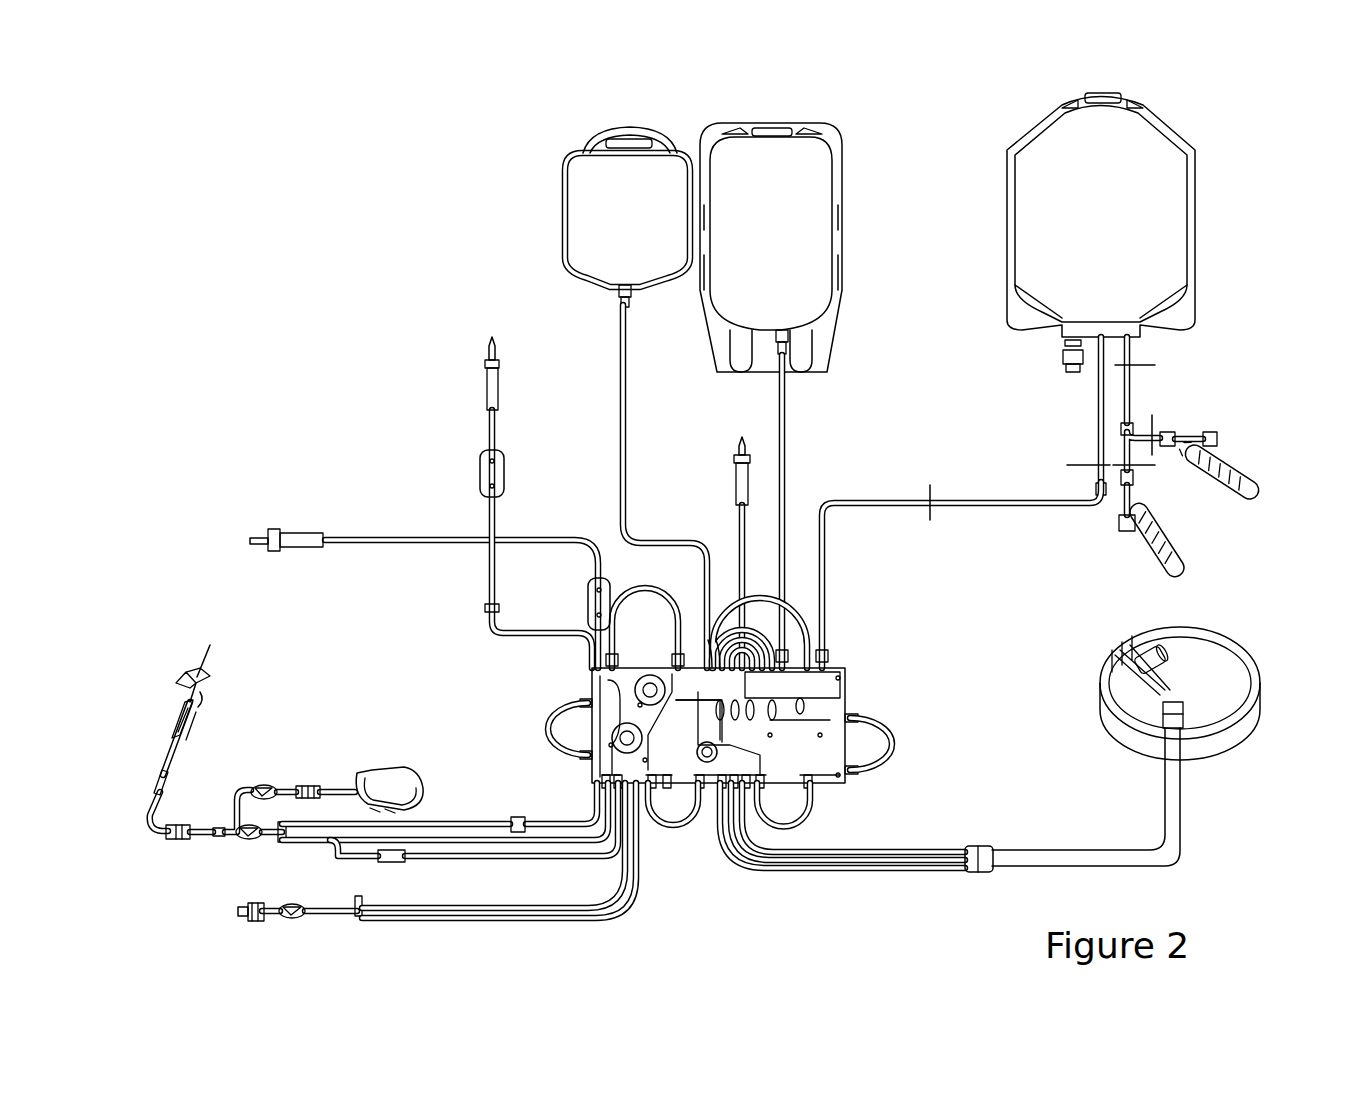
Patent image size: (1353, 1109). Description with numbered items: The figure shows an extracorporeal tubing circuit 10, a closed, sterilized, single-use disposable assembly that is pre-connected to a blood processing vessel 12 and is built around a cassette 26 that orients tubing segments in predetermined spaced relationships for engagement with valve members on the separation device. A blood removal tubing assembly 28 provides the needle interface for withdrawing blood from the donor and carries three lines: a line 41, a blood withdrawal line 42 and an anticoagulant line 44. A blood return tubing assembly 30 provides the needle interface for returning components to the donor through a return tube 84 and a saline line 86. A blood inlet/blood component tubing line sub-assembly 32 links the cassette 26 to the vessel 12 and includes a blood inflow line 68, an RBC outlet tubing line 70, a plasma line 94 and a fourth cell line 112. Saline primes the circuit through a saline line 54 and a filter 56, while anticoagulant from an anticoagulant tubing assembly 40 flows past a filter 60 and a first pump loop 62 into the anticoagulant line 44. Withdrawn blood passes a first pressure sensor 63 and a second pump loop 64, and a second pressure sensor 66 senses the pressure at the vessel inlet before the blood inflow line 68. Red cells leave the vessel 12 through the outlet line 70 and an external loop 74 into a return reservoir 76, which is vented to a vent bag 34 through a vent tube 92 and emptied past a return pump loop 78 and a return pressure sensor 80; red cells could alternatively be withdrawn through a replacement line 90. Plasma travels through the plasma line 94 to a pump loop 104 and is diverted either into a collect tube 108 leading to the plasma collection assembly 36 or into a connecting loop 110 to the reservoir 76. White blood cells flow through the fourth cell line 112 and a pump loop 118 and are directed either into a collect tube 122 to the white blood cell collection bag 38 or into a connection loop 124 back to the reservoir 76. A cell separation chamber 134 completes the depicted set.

The extracorporeal tubing circuit 10 is at (491, 263).
The blood processing vessel 12 is at (1136, 681).
The cassette 26 is at (666, 717).
The blood removal tubing assembly 28 is at (278, 851).
The blood return tubing assembly 30 is at (434, 937).
The blood inlet/blood component tubing line sub-assembly 32 is at (936, 846).
The vent bag 34 is at (563, 187).
The plasma collection assembly 36 is at (845, 190).
The white blood cell collection bag 38 is at (1007, 185).
The anticoagulant tubing assembly 40 is at (367, 537).
The line 41 is at (515, 866).
The blood withdrawal line 42 is at (478, 852).
The anticoagulant line 44 is at (488, 818).
The saline line 54 is at (490, 525).
The filter 56 is at (480, 472).
The filter 60 is at (590, 595).
The first pump loop 62 is at (545, 732).
The first pressure sensor 63 is at (627, 740).
The second pump loop 64 is at (671, 826).
The second pressure sensor 66 is at (705, 770).
The blood inflow line 68 is at (812, 870).
The RBC outlet tubing line 70 is at (775, 864).
The external loop 74 is at (712, 640).
The return reservoir 76 is at (702, 726).
The return pump loop 78 is at (642, 592).
The return pressure sensor 80 is at (650, 682).
The return tube 84 is at (576, 922).
The saline line 86 is at (620, 866).
The replacement line 90 is at (740, 538).
The vent tube 92 is at (624, 428).
The plasma line 94 is at (745, 832).
The pump loop 104 is at (812, 812).
The collect tube 108 is at (786, 440).
The connecting loop 110 is at (752, 633).
The fourth cell line 112 is at (866, 853).
The pump loop 118 is at (898, 750).
The collect tube 122 is at (1098, 420).
The connection loop 124 is at (830, 640).
The cell separation chamber 134 is at (1142, 649).